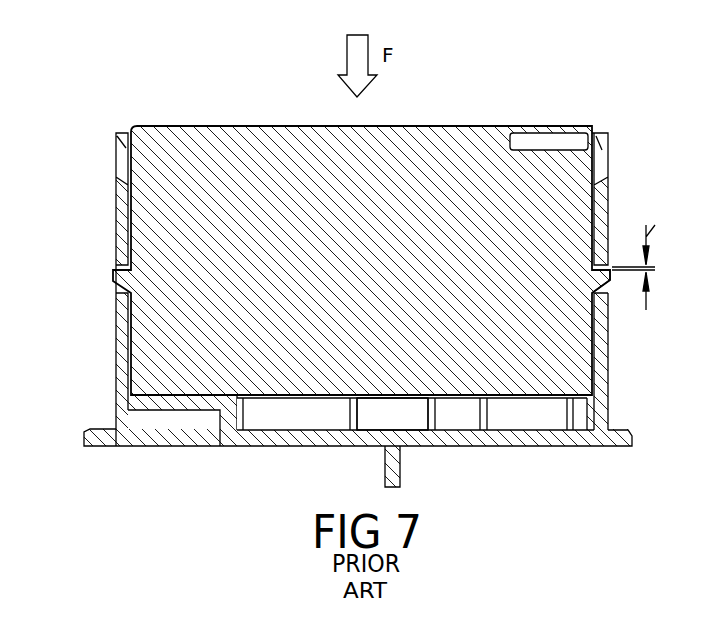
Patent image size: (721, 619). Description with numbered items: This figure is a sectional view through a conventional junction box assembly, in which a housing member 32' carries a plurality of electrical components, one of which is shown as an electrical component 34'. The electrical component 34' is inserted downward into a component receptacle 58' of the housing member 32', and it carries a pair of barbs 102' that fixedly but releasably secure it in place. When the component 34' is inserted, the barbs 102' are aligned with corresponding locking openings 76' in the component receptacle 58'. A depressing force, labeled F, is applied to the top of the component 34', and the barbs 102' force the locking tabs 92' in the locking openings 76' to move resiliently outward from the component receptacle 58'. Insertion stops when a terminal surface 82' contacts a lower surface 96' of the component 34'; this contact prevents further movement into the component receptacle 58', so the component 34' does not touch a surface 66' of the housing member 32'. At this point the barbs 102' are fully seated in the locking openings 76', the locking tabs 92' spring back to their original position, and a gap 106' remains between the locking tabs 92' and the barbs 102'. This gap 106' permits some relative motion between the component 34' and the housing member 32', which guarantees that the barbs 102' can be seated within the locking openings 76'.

The electrical component 34' is at (361, 230).
The locking openings 76' is at (74, 289).
The locking tabs 92' is at (628, 199).
The gap 106' is at (654, 262).
The barbs 102' is at (636, 308).
The component receptacle 58' is at (642, 361).
The lower surface 96' is at (202, 438).
The surface 66' is at (415, 449).
The terminal surface 82' is at (425, 432).
The housing member 32' is at (358, 463).